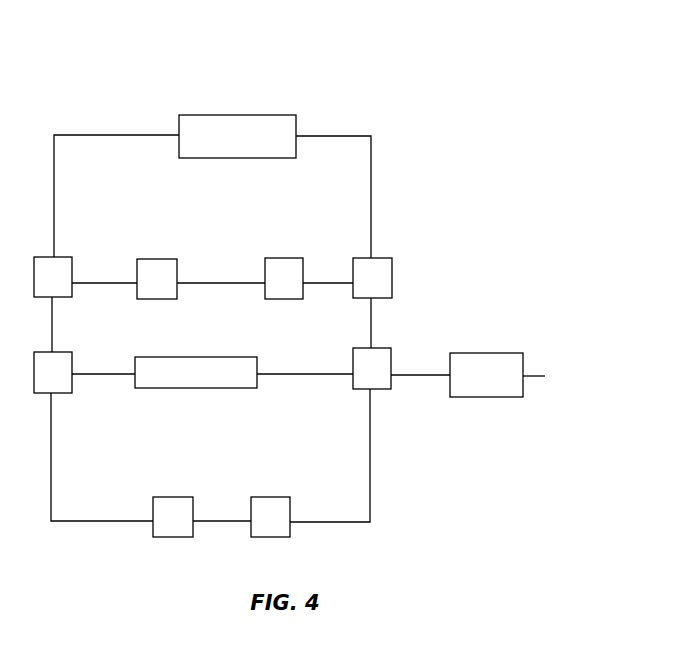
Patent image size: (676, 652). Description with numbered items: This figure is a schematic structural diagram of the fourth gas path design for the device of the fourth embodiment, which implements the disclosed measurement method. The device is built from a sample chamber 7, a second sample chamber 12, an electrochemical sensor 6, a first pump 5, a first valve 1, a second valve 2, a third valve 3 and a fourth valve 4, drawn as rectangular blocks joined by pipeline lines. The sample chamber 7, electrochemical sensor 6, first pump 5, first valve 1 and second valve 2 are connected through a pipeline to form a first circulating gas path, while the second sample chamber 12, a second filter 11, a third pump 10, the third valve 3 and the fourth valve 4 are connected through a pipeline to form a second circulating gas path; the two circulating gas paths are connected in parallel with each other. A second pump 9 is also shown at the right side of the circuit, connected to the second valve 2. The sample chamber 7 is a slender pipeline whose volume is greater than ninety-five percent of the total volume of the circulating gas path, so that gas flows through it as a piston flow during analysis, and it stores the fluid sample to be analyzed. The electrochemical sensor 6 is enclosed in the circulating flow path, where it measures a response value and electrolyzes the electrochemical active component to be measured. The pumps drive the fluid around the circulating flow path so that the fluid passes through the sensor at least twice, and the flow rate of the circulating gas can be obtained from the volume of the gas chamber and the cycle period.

The first valve 1 is at (67, 344).
The second valve 2 is at (381, 341).
The third valve 3 is at (68, 238).
The fourth valve 4 is at (389, 243).
The first pump 5 is at (186, 482).
The electrochemical sensor 6 is at (286, 482).
The sample chamber 7 is at (196, 340).
The second pump 9 is at (494, 348).
The third pump 10 is at (177, 239).
The second filter 11 is at (301, 242).
The second sample chamber 12 is at (237, 105).